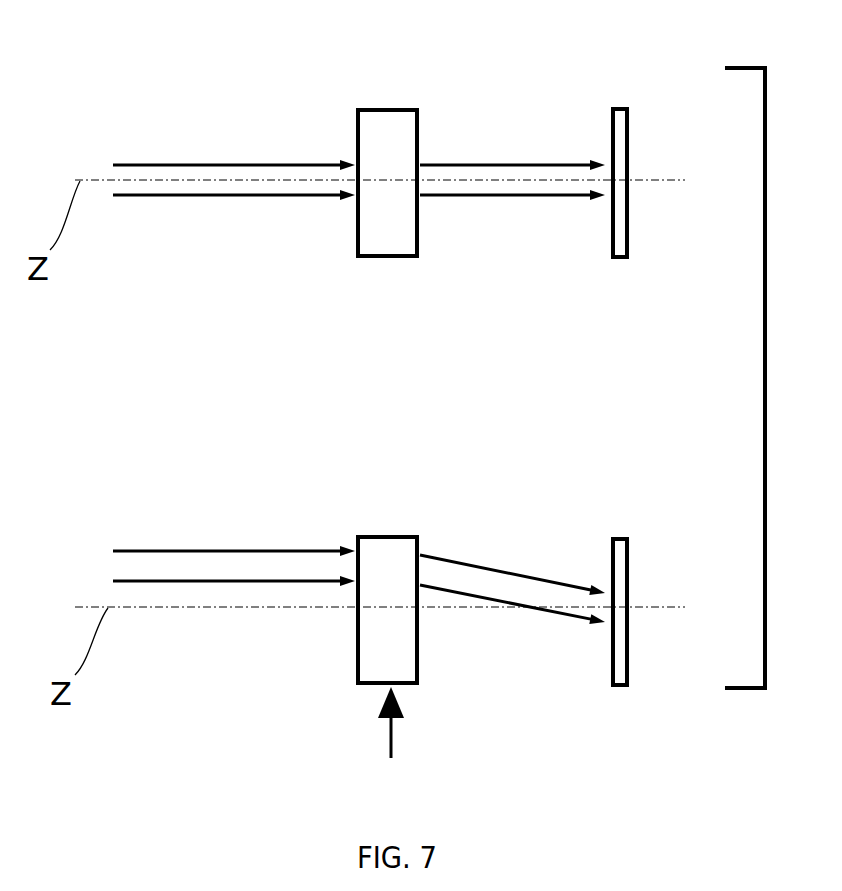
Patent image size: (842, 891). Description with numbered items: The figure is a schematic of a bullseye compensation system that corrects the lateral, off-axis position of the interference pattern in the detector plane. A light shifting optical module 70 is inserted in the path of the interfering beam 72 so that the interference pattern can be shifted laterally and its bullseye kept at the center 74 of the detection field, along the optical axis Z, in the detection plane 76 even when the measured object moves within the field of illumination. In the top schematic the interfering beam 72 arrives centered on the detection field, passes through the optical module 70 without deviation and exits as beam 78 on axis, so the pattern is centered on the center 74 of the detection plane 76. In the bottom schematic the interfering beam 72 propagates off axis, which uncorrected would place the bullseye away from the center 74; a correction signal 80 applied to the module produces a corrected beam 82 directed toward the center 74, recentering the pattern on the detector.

The light shifting optical module 70 is at (355, 218).
The interfering beam 72 is at (165, 163).
The center of the detection field 74 is at (607, 177).
The detection plane 76 is at (629, 240).
The exit beam 78 is at (443, 165).
The correction signal 80 is at (387, 751).
The corrected beam 82 is at (485, 567).